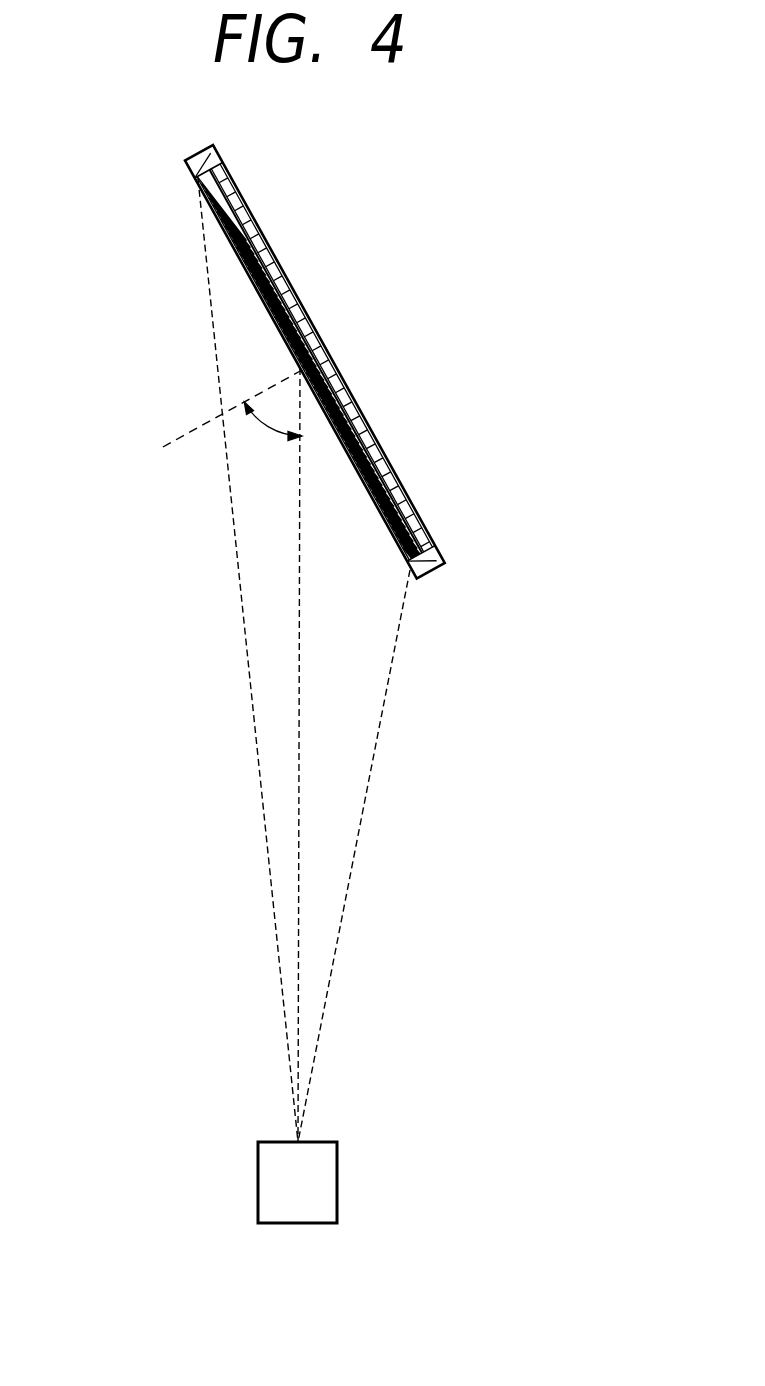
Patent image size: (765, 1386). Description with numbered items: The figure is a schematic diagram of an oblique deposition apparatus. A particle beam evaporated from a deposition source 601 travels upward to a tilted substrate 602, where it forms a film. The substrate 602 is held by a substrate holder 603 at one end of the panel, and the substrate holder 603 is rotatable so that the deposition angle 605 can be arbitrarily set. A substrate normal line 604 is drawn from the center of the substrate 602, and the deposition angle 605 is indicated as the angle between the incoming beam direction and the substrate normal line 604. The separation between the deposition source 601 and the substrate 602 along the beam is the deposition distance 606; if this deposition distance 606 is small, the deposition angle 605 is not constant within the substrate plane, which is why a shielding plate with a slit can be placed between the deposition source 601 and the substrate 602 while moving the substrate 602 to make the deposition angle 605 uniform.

The deposition source 601 is at (295, 1225).
The substrate 602 is at (312, 345).
The substrate holder 603 is at (432, 572).
The substrate normal line 604 is at (192, 430).
The deposition angle 605 is at (268, 425).
The deposition distance 606 is at (299, 856).